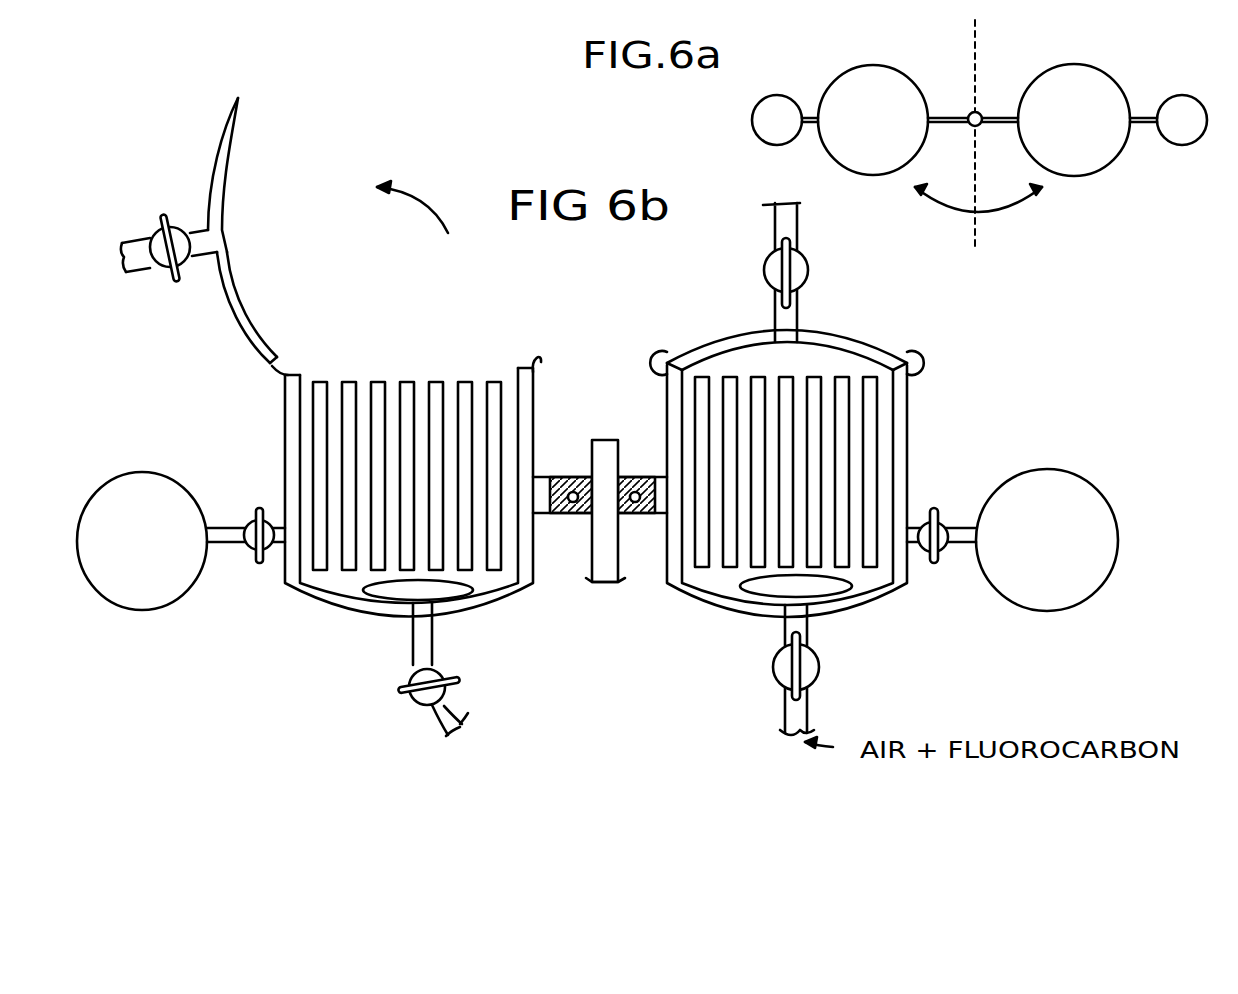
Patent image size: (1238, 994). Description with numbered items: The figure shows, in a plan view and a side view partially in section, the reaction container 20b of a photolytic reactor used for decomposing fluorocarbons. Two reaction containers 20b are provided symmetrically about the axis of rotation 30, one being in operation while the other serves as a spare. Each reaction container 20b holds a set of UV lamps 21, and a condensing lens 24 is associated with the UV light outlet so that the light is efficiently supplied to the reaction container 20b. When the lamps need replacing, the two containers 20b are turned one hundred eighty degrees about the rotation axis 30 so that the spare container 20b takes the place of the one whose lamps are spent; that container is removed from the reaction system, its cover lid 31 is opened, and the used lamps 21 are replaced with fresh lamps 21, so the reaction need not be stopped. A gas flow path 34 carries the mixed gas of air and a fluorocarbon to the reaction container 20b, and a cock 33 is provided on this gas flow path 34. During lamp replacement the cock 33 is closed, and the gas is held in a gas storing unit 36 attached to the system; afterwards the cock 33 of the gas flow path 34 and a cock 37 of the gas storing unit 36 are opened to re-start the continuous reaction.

In FIG. 6A, the reaction container 20b is at (912, 77).
In FIG. 6B, the reaction container 20b is at (287, 463).
In FIG. 6B, the UV lamps 21 is at (318, 405).
In FIG. 6B, the condensing lens 24 is at (390, 592).
In FIG. 6A, the axis of rotation 30 is at (970, 130).
In FIG. 6B, the axis of rotation 30 is at (603, 440).
In FIG. 6B, the cover lid 31 is at (237, 328).
In FIG. 6B, the cock 33 is at (151, 232).
In FIG. 6B, the gas flow path 34 is at (145, 272).
In FIG. 6A, the gas storing unit 36 is at (782, 95).
In FIG. 6B, the gas storing unit 36 is at (117, 472).
In FIG. 6B, the cock 37 is at (245, 552).